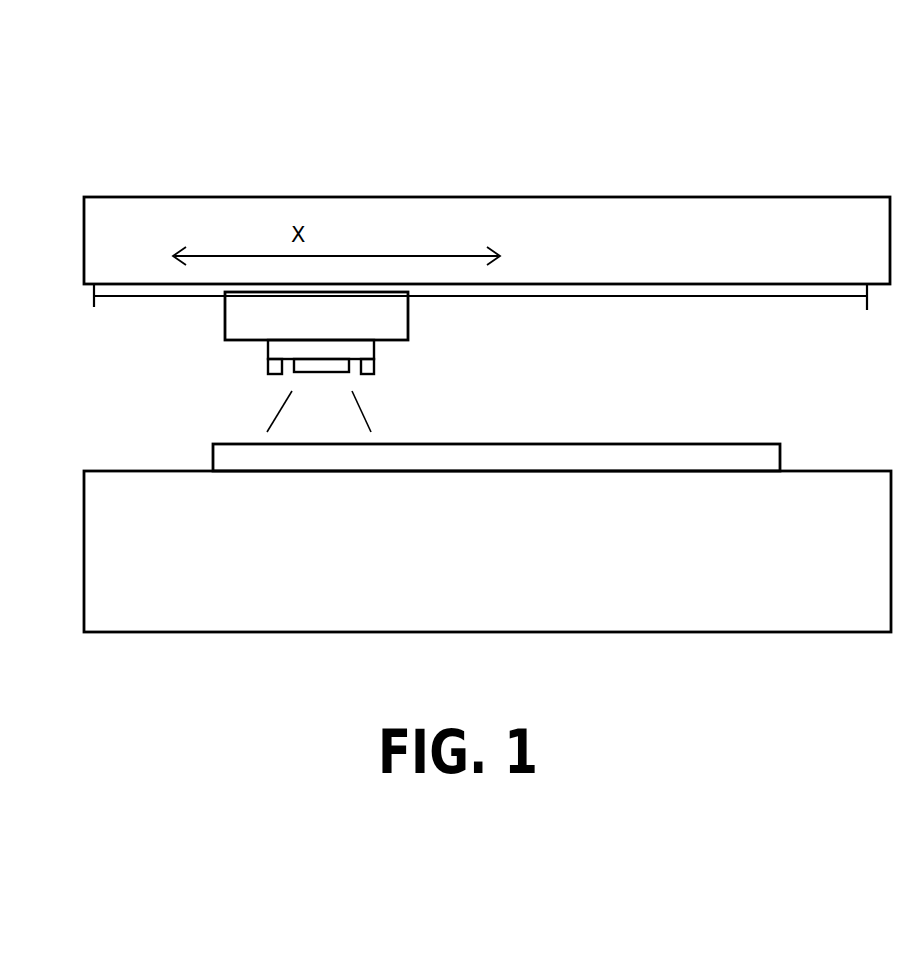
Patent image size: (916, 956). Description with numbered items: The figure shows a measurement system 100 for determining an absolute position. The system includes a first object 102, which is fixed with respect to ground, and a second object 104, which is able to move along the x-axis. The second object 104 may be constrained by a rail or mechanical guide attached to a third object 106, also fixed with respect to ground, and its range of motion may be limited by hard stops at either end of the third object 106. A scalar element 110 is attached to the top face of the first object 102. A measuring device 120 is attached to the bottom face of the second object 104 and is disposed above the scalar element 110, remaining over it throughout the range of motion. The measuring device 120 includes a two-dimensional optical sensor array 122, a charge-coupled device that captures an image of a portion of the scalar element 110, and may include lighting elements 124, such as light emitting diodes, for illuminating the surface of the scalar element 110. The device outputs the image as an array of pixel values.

The measurement system 100 is at (413, 42).
The first object 102 is at (787, 576).
The second object 104 is at (338, 326).
The third object 106 is at (786, 258).
The scalar element 110 is at (676, 443).
The measuring device 120 is at (375, 355).
The two-dimensional optical sensor array 122 is at (318, 377).
The lighting elements 124 is at (268, 371).